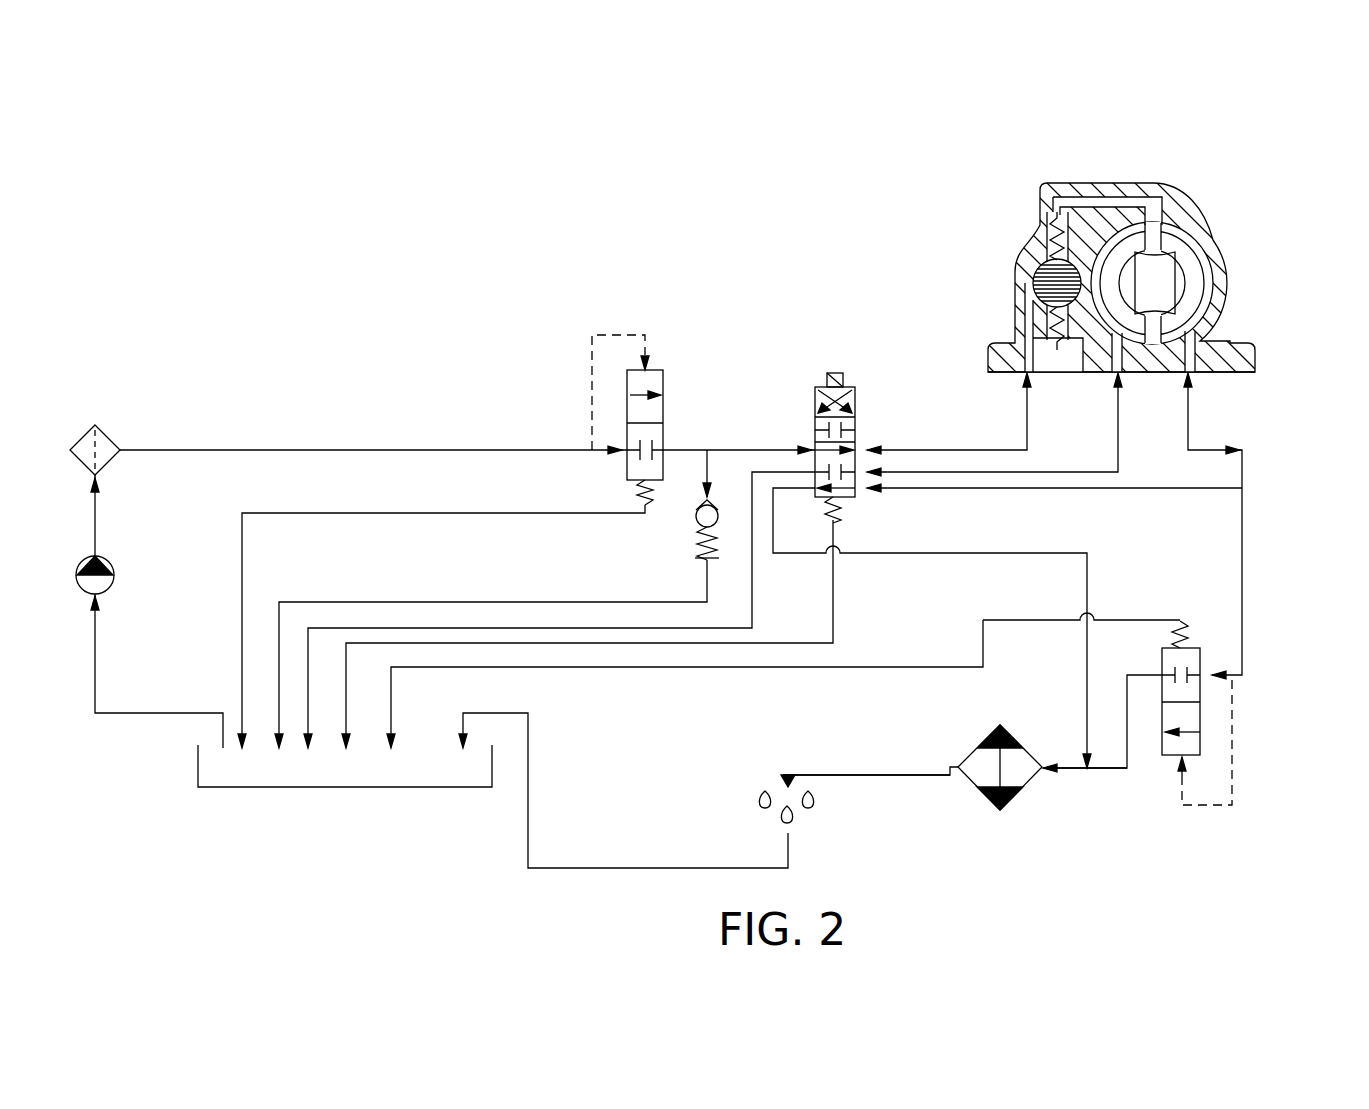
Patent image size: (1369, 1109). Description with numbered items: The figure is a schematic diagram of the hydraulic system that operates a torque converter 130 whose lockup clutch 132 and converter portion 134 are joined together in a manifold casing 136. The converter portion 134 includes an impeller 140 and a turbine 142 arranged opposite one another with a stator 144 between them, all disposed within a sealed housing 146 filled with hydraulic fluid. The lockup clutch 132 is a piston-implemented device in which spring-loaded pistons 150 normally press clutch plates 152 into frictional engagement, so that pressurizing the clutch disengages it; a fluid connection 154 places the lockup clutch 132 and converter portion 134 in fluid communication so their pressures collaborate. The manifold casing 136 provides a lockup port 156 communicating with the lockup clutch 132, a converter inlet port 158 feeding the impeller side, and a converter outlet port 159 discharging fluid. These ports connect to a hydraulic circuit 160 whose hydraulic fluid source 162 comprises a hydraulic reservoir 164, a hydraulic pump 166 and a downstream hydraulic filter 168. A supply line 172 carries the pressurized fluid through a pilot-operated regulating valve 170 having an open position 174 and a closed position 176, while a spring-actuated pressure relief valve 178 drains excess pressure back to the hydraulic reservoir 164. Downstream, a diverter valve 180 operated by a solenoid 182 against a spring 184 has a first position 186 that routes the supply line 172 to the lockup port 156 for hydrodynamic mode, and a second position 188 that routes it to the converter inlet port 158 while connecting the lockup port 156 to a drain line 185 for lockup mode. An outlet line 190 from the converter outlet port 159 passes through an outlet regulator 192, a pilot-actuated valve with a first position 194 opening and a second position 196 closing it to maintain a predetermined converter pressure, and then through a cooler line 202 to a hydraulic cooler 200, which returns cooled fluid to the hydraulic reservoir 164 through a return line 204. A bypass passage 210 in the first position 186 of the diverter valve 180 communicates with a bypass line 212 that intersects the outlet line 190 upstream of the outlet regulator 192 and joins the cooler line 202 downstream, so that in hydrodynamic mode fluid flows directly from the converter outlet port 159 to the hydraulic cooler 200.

The torque converter 130 is at (1067, 263).
The lockup clutch 132 is at (1097, 373).
The converter portion 134 is at (1218, 265).
The manifold casing 136 is at (998, 358).
The impeller 140 is at (1115, 237).
The turbine 142 is at (1180, 235).
The stator 144 is at (1153, 262).
The sealed housing 146 is at (1225, 300).
The pistons 150 is at (1048, 258).
The clutch plates 152 is at (1035, 282).
The fluid connection 154 is at (1083, 203).
The lockup port 156 is at (1022, 378).
The converter inlet port 158 is at (1122, 373).
The converter outlet port 159 is at (1193, 377).
The hydraulic circuit 160 is at (380, 350).
The hydraulic fluid source 162 is at (147, 800).
The hydraulic reservoir 164 is at (330, 787).
The hydraulic pump 166 is at (108, 562).
The hydraulic filter 168 is at (110, 437).
The regulating valve 170 is at (619, 377).
The supply line 172 is at (383, 450).
The open position 174 is at (663, 378).
The closed position 176 is at (627, 470).
The pressure relief valve 178 is at (700, 540).
The diverter valve 180 is at (988, 414).
The solenoid 182 is at (828, 372).
The spring 184 is at (840, 512).
The drain line 185 is at (753, 608).
The first position 186 is at (860, 493).
The second position 188 is at (815, 410).
The outlet line 190 is at (1244, 710).
The outlet regulator 192 is at (1149, 773).
The first position 194 is at (1200, 713).
The second position 196 is at (1200, 660).
The hydraulic cooler 200 is at (978, 783).
The cooler line 202 is at (1105, 770).
The return line 204 is at (870, 775).
The bypass passage 210 is at (830, 494).
The bypass line 212 is at (920, 598).